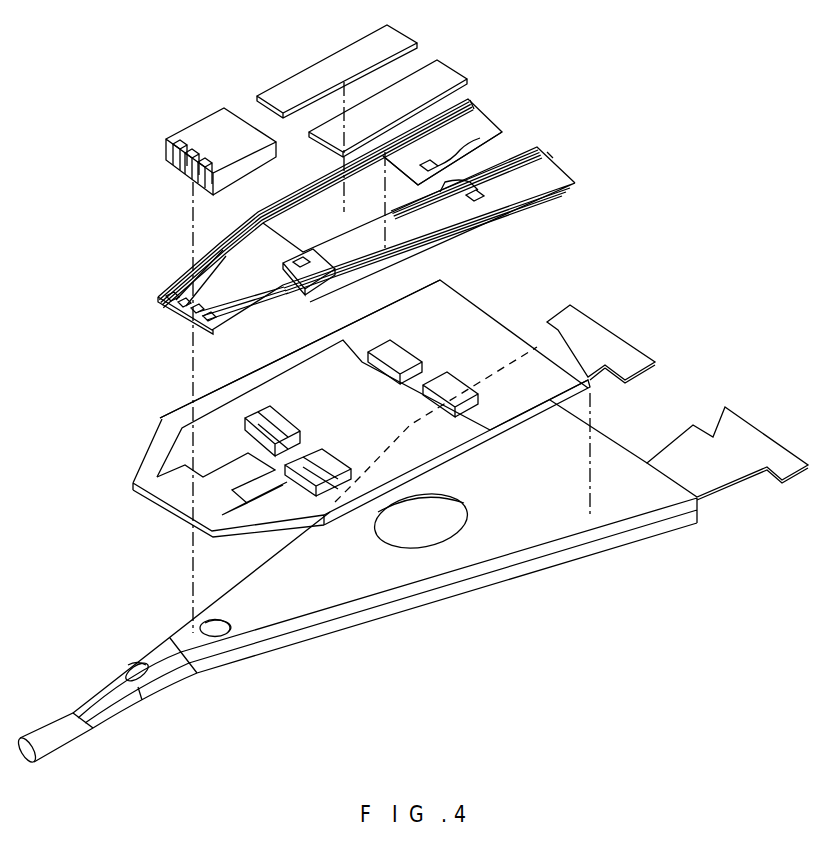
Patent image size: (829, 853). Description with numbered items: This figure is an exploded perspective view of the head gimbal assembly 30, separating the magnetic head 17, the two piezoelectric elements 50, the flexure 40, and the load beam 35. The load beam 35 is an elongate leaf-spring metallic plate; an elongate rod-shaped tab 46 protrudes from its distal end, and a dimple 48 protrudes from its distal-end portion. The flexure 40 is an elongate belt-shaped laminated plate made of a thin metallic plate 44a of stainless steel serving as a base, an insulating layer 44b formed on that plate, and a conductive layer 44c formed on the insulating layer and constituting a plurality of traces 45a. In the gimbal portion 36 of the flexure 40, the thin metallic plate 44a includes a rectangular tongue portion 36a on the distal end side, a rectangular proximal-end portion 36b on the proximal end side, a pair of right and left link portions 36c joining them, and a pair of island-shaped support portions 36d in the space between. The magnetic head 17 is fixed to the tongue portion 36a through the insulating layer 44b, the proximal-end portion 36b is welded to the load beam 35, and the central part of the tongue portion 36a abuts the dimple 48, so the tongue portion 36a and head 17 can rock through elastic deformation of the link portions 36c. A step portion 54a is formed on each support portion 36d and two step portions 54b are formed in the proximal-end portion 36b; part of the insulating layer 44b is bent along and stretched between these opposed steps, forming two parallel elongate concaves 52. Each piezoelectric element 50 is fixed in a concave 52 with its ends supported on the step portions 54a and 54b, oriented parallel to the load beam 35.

The magnetic head 17 is at (197, 132).
The head gimbal assembly 30 is at (598, 141).
The load beam 35 is at (520, 548).
The gimbal portion 36 is at (232, 352).
The tongue portion 36a is at (235, 488).
The proximal-end portion 36b is at (505, 420).
The link portions 36c is at (222, 389).
The support portions 36d is at (247, 425).
The flexure 40 is at (608, 300).
The thin metallic plate 44a is at (465, 305).
The insulating layer 44b is at (307, 280).
The conductive layer 44c is at (507, 217).
The traces 45a is at (478, 116).
The tab 46 is at (53, 737).
The dimple 48 is at (228, 636).
The piezoelectric elements 50 is at (395, 37).
The concaves 52 is at (443, 248).
The step portions 54a is at (280, 427).
The step portions 54b is at (397, 358).